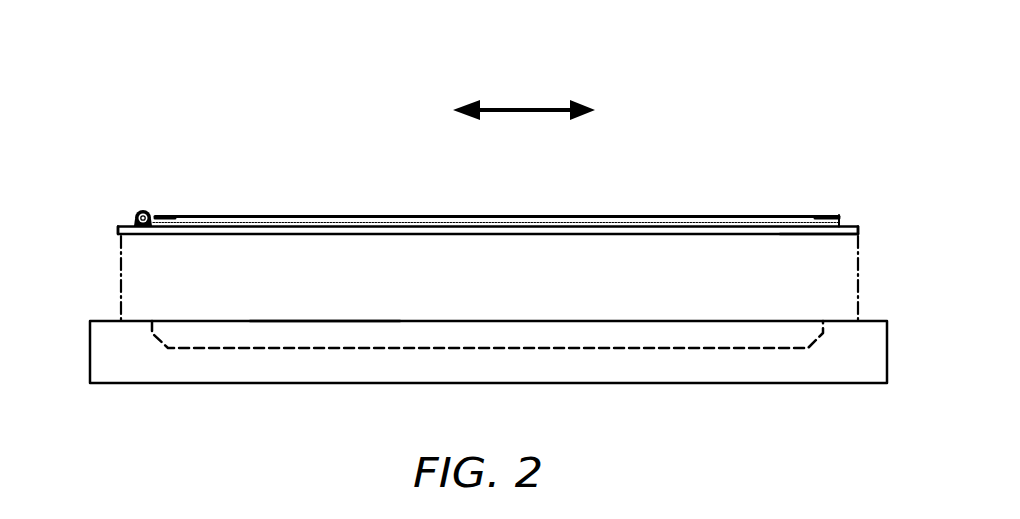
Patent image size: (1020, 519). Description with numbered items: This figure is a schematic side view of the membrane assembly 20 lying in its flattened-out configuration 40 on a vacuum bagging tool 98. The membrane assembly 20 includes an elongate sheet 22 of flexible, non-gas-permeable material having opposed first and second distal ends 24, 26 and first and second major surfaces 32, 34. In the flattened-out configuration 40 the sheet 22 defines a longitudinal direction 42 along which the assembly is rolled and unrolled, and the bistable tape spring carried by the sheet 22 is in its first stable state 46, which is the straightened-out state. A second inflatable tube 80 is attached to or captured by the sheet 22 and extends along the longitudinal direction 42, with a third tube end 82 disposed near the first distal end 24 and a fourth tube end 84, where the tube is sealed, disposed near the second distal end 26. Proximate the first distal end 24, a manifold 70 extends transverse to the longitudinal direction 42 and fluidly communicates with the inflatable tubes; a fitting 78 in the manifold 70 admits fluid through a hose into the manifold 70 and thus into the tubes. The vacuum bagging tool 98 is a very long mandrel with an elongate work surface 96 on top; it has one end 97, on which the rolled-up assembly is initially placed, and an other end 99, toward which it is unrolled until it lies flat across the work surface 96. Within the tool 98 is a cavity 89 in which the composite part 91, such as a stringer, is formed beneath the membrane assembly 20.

The membrane assembly 20 is at (482, 182).
The flattened-out configuration 40 is at (482, 182).
The first stable state 46 is at (482, 182).
The longitudinal direction 42 is at (523, 109).
The elongate sheet 22 is at (262, 234).
The first distal end 24 is at (118, 228).
The second distal end 26 is at (860, 228).
The first major surface 32 is at (848, 225).
The second major surface 34 is at (805, 234).
The manifold 70 is at (116, 174).
The fitting 78 is at (139, 209).
The second inflatable tube 80 is at (478, 215).
The third tube end 82 is at (170, 220).
The fourth tube end 84 is at (825, 222).
The cavity 89 is at (487, 309).
The composite part 91 is at (507, 340).
The elongate work surface 96 is at (310, 321).
The one end of the vacuum bagging tool 97 is at (110, 320).
The vacuum bagging tool 98 is at (488, 344).
The other end of the vacuum bagging tool 99 is at (872, 320).